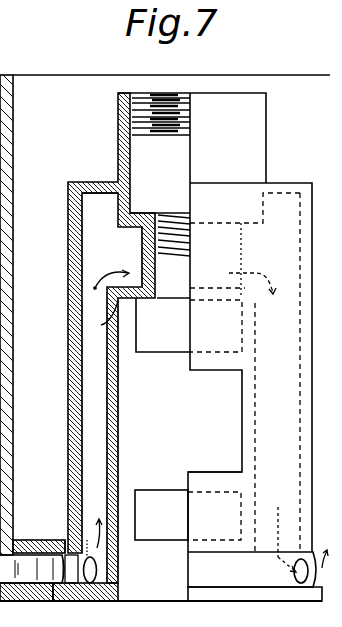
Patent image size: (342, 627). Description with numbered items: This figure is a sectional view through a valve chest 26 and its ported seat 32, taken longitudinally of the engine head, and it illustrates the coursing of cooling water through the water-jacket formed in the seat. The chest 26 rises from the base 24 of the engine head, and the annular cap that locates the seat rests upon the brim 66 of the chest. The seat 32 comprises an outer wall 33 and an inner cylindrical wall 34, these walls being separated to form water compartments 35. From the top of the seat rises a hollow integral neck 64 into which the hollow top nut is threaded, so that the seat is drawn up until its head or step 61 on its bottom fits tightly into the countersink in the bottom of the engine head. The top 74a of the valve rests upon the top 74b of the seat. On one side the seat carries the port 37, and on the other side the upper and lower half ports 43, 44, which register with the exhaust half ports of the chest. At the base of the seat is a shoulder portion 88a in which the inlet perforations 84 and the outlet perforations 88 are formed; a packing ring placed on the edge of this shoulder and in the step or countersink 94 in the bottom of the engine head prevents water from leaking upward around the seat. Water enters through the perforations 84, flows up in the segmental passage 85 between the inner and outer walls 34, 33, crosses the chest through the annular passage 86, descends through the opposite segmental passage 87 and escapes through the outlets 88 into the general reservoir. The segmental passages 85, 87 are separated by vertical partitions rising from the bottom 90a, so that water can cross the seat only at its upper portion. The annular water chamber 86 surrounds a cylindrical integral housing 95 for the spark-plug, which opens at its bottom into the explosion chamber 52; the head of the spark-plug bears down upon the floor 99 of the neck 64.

The brim 66 is at (13, 76).
The valve chest 26 is at (13, 138).
The ported seat 32 is at (95, 175).
The neck 64 is at (192, 222).
The top of the seat 74b is at (104, 194).
The water compartment 35 is at (95, 241).
The annular passage 86 is at (209, 244).
The spark-plug housing 95 is at (143, 259).
The floor of the neck 99 is at (102, 318).
The segmental passage 85 is at (94, 441).
The inner cylindrical wall 34 is at (119, 434).
The half port 43 is at (168, 350).
The segmental passage 87 is at (300, 400).
The explosion chamber 52 is at (197, 488).
The port 37 is at (215, 466).
The half port 44 is at (153, 541).
The top of the valve 74a is at (39, 541).
The countersink 94 is at (64, 548).
The perforations 84 is at (83, 551).
The outer wall 33 is at (32, 569).
The base 24 is at (171, 313).
The bottom 90a is at (92, 601).
The shoulder portion 88a is at (252, 547).
The outlets 88 is at (294, 578).
The step 61 is at (255, 595).